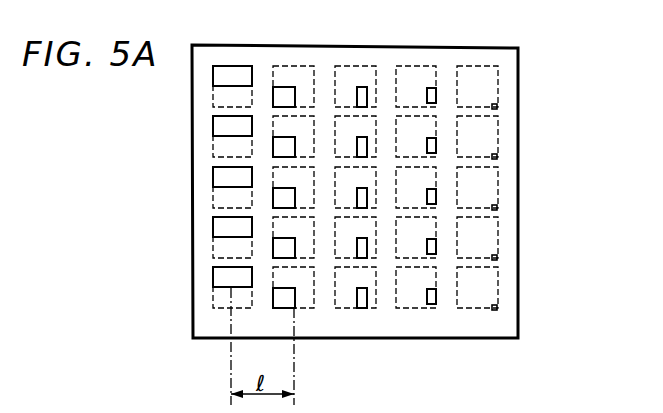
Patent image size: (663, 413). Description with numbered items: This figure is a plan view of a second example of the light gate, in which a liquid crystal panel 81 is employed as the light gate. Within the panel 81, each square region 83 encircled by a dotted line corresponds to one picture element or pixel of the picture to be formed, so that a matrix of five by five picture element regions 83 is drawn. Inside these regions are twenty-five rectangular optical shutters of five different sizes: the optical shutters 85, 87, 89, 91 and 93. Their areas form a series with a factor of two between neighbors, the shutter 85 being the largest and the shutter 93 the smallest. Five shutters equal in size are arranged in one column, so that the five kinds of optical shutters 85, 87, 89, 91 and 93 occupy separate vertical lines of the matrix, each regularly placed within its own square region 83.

The liquid crystal panel 81 is at (518, 310).
The picture element region 83 is at (498, 290).
The optical shutter 85 is at (235, 74).
The optical shutter 87 is at (284, 90).
The optical shutter 89 is at (363, 93).
The optical shutter 91 is at (432, 90).
The optical shutter 93 is at (497, 104).